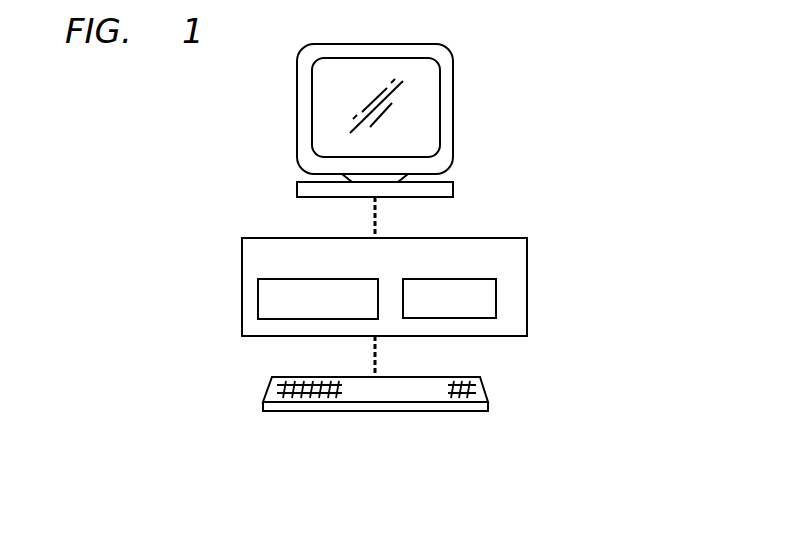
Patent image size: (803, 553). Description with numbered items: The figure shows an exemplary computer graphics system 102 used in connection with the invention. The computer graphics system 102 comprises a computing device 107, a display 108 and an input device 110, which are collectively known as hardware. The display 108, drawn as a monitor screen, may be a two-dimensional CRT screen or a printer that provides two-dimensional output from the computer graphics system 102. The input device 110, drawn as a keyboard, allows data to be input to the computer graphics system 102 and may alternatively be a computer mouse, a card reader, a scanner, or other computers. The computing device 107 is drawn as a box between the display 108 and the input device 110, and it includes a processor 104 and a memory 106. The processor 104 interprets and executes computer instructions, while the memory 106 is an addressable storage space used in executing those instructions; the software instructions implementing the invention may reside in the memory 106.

The computer graphics system 102 is at (498, 63).
The processor 104 is at (293, 279).
The memory 106 is at (420, 279).
The computing device 107 is at (527, 283).
The display 108 is at (453, 150).
The input device 110 is at (488, 393).